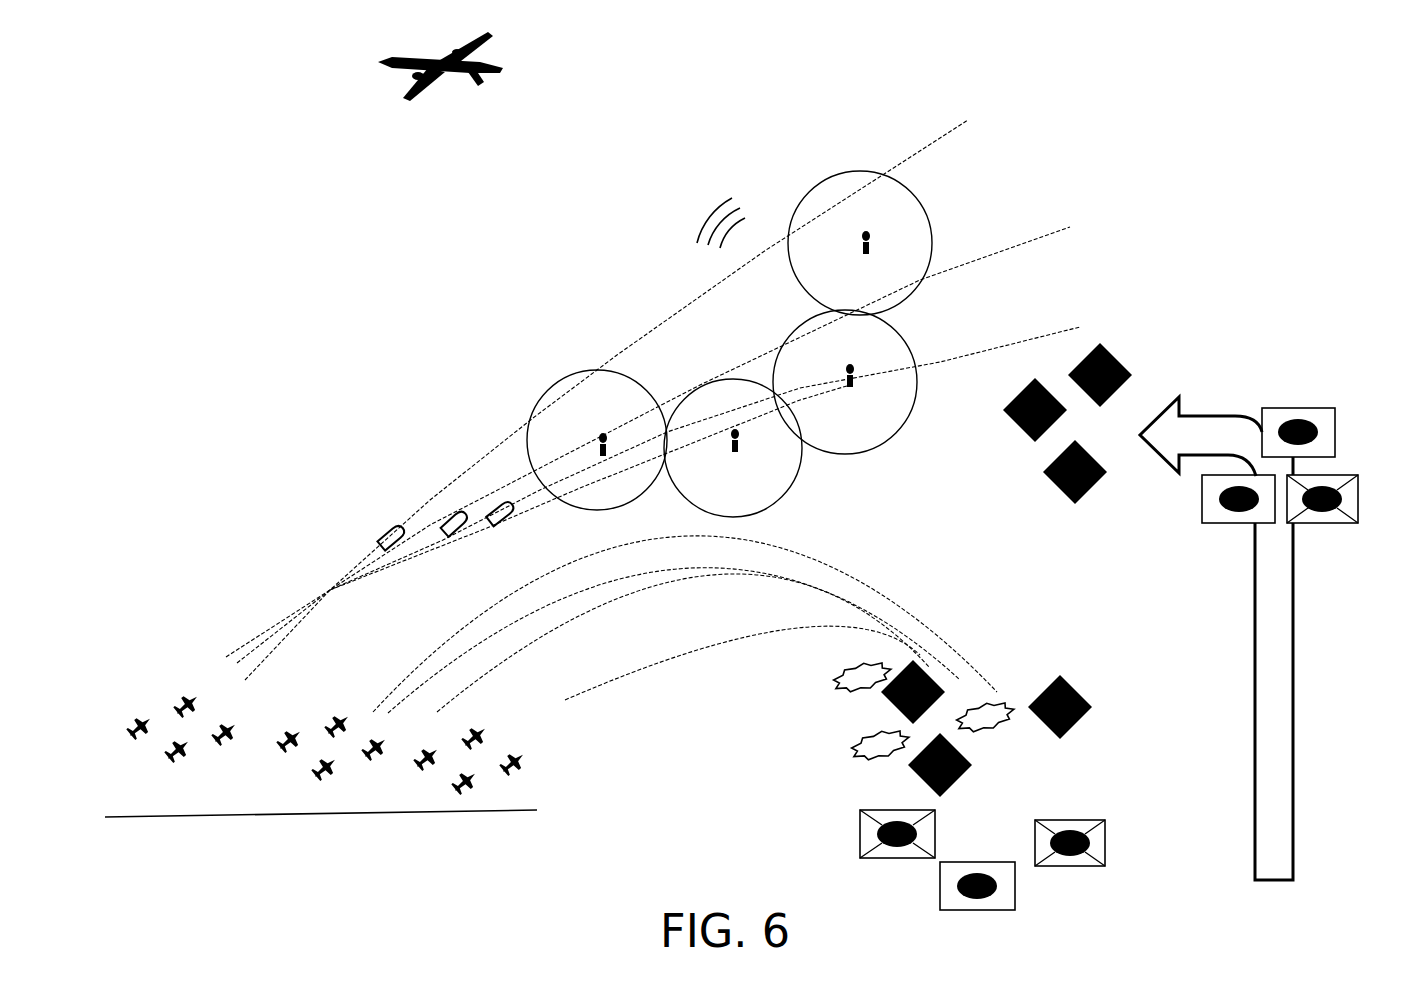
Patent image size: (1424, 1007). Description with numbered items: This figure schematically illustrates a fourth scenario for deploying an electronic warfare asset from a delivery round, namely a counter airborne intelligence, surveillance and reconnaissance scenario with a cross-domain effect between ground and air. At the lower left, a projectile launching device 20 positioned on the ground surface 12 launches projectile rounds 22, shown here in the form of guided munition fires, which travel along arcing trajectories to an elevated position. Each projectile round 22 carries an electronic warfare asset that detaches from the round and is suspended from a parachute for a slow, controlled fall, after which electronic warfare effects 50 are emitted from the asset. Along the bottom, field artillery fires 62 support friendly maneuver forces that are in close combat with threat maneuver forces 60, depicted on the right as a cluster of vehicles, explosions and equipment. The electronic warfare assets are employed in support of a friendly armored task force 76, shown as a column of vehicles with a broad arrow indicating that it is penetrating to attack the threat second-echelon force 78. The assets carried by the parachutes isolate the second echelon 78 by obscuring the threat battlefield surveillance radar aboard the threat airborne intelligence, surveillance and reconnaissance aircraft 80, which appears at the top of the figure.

The ground surface 12 is at (518, 809).
The projectile launching device 20 is at (183, 685).
The projectile round 22 is at (502, 505).
The EW effects 50 is at (752, 188).
The threat maneuver forces 60 is at (1092, 752).
The FA fires 62 is at (408, 800).
The friendly armored task force 76 is at (1294, 665).
The threat second-echelon force 78 is at (1125, 365).
The threat airborne ISR aircraft 80 is at (500, 70).